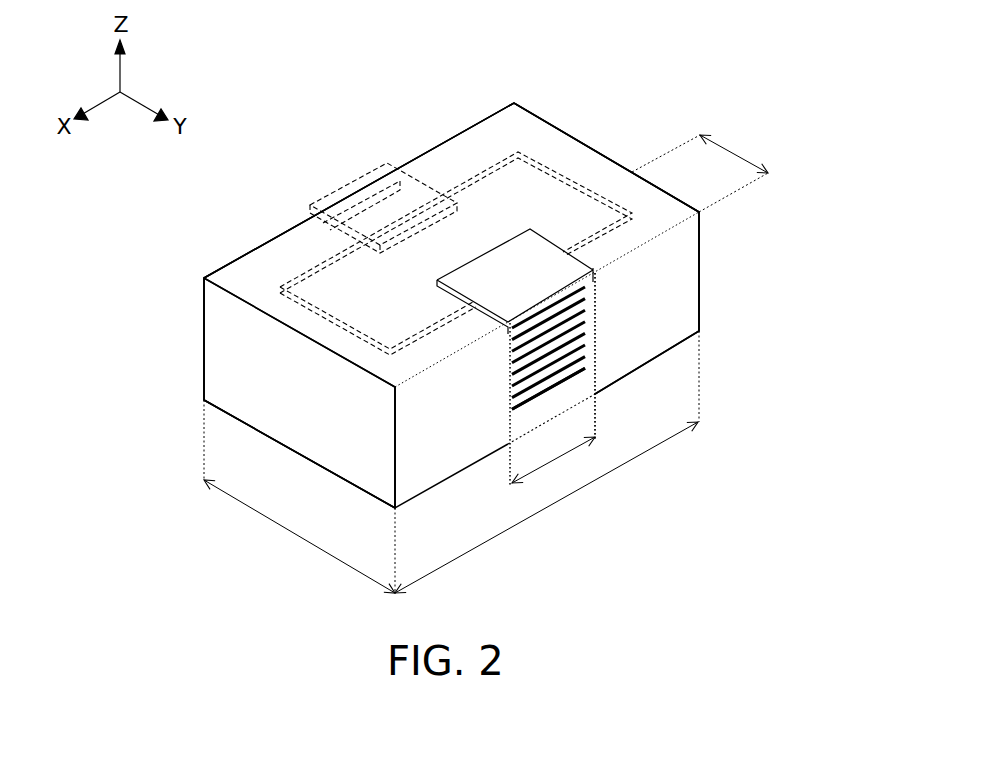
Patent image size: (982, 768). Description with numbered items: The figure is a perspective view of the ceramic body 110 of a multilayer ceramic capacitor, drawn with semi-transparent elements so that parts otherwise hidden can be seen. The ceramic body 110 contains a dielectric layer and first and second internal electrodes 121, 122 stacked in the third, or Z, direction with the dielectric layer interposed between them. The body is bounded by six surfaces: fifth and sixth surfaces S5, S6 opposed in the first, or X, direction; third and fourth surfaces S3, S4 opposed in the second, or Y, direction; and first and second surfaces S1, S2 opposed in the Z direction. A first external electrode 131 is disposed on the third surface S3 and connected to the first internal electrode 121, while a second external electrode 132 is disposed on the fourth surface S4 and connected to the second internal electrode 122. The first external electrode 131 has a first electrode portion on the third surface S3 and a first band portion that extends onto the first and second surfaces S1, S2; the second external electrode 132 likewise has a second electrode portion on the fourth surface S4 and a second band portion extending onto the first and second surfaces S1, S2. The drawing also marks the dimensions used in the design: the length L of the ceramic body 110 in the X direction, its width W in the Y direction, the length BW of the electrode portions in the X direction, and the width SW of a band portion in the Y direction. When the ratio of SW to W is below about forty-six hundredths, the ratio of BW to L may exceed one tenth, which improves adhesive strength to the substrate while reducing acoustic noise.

The ceramic body 110 is at (540, 140).
The first internal electrode 121 is at (586, 288).
The second internal electrode 122 is at (347, 180).
The first external electrode 131 is at (597, 355).
The second external electrode 132 is at (361, 214).
The first surface S1 is at (502, 193).
The second surface S2 is at (272, 398).
The third surface S3 is at (680, 282).
The fourth surface S4 is at (268, 267).
The fifth surface S5 is at (232, 361).
The sixth surface S6 is at (573, 167).
The width of the band portion SW is at (703, 166).
The length of the electrode portions BW is at (552, 385).
The length of the ceramic body L is at (547, 462).
The width of the ceramic body W is at (299, 496).